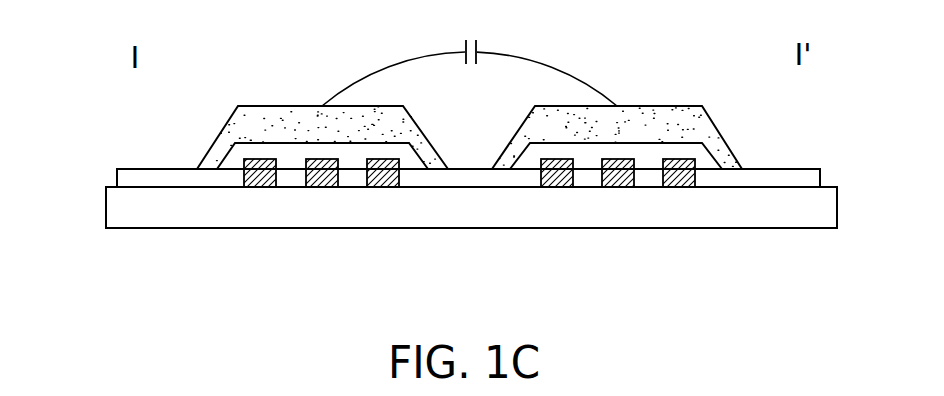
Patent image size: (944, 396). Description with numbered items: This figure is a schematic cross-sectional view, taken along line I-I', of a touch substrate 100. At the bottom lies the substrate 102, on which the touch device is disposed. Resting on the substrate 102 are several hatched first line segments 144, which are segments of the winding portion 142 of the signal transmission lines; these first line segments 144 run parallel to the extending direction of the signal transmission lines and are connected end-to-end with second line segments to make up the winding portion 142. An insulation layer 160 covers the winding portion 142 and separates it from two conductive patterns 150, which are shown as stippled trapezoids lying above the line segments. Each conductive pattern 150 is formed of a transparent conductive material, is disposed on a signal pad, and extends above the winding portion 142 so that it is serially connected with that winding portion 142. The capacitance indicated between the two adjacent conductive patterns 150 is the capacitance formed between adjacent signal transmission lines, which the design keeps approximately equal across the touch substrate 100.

The touch substrate 100 is at (802, 282).
The substrate 102 is at (730, 218).
The winding portion 142 is at (320, 184).
The first line segments 144 is at (469, 227).
The conductive patterns 150 is at (300, 123).
The insulation layer 160 is at (153, 175).